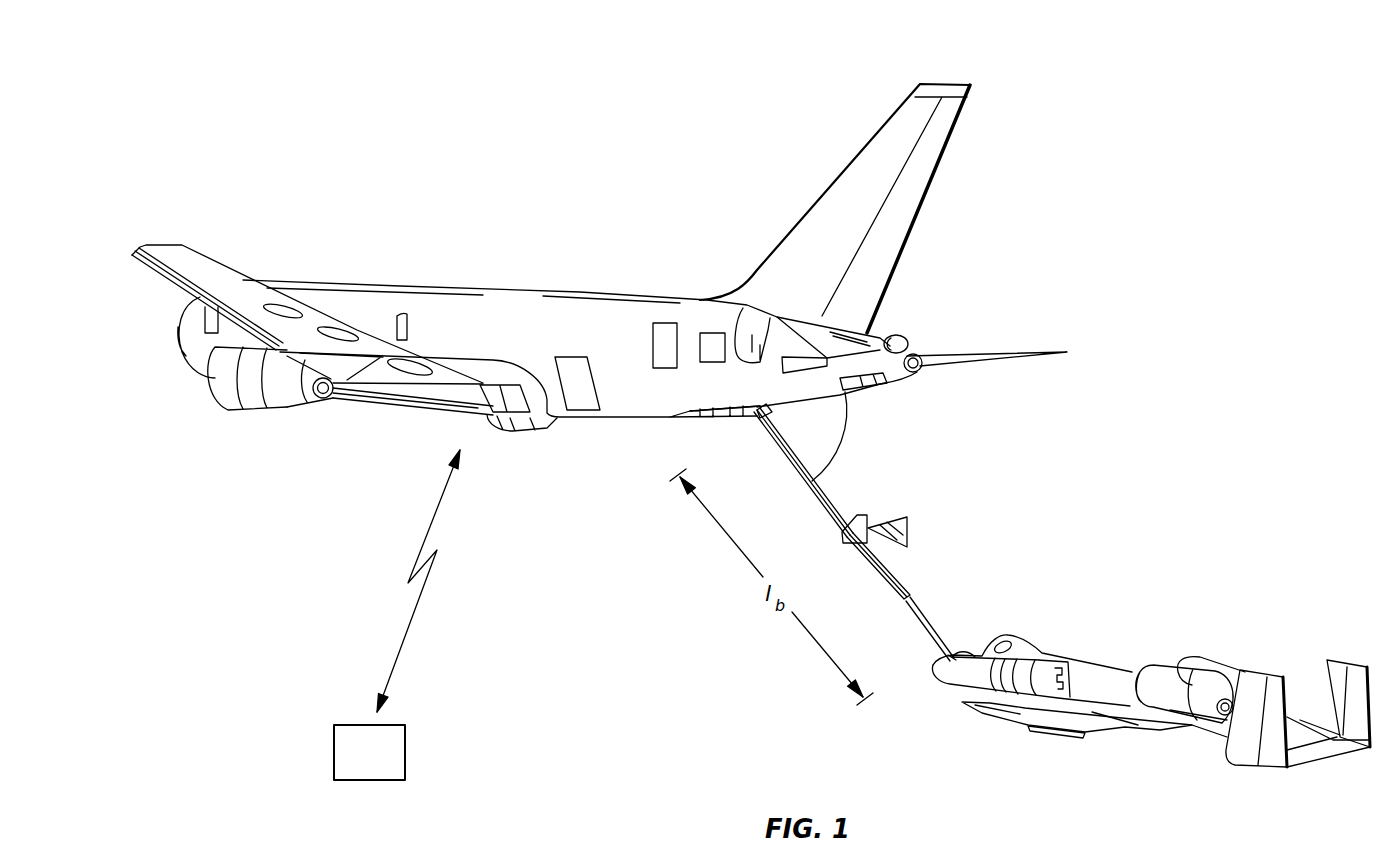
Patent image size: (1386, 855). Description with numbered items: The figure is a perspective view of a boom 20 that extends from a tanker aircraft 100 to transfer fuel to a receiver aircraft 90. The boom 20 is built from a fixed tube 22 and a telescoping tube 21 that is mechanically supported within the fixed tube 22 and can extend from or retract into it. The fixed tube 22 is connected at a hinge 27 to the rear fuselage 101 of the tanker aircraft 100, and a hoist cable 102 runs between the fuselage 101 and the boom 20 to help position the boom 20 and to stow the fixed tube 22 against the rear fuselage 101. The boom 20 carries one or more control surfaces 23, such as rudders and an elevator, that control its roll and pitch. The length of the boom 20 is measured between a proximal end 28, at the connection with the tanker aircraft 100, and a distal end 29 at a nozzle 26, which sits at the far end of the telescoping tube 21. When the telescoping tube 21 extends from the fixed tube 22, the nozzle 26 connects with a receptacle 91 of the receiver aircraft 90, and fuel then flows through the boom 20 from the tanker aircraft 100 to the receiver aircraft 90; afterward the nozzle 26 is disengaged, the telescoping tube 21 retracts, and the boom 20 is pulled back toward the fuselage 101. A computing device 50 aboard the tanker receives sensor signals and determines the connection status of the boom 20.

The tanker aircraft 100 is at (470, 288).
The computing device 50 is at (710, 333).
The rear fuselage 101 is at (890, 336).
The hoist cable 102 is at (845, 437).
The hinge 27 is at (757, 420).
The proximal end 28 is at (778, 412).
The boom 20 is at (877, 547).
The fixed tube 22 is at (840, 495).
The control surfaces 23 is at (883, 515).
The telescoping tube 21 is at (923, 610).
The distal end 29 is at (950, 655).
The nozzle 26 is at (950, 653).
The receptacle 91 is at (957, 653).
The receiver aircraft 90 is at (1151, 683).